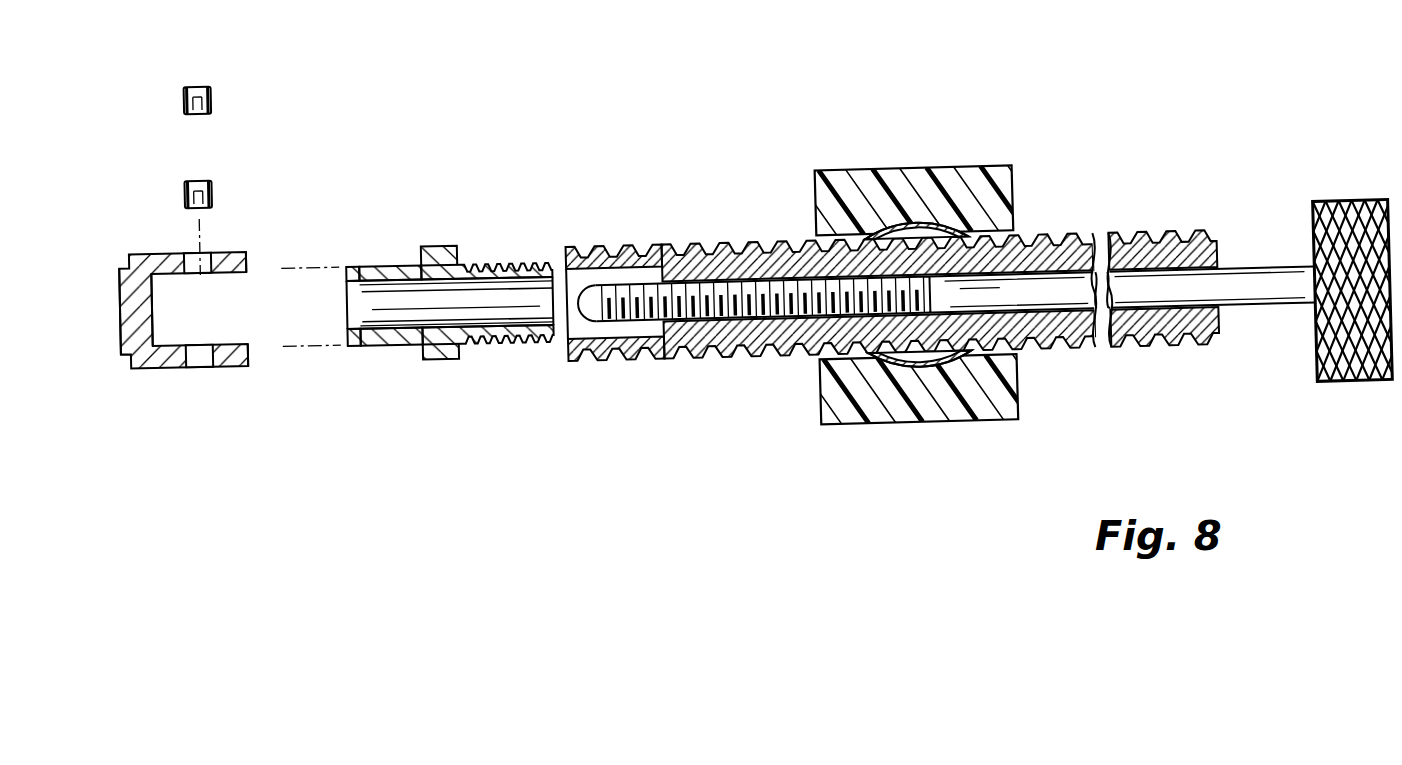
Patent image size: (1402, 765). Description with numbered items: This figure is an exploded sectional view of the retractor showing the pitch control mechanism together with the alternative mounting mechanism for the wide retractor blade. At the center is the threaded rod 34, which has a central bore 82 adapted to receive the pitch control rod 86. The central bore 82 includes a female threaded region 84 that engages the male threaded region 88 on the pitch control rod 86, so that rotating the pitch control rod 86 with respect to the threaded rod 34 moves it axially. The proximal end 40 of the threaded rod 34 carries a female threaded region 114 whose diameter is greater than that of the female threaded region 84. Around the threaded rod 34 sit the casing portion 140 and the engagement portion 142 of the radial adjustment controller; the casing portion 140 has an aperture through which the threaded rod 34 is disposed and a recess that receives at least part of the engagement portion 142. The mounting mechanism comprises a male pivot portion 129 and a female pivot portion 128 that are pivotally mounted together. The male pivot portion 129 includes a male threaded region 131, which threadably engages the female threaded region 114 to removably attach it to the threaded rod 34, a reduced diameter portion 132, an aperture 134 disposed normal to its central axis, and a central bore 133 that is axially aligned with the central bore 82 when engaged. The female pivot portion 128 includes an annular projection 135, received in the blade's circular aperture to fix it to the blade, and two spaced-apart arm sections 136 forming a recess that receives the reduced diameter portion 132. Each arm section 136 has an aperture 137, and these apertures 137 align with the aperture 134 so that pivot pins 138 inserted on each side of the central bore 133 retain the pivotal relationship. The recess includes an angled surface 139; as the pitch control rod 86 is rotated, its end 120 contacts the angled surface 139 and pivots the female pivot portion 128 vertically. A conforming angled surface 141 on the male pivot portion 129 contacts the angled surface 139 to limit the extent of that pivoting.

The threaded rod 34 is at (1122, 236).
The proximal end 40 is at (707, 250).
The central bore 82 is at (1092, 347).
The female threaded region 84 is at (720, 340).
The pitch control rod 86 is at (1165, 347).
The male threaded region 88 is at (790, 296).
The female threaded region 114 is at (598, 253).
The end of the pitch control rod 120 is at (586, 302).
The female pivot portion 128 is at (131, 363).
The male pivot portion 129 is at (446, 250).
The male threaded region 131 is at (493, 342).
The reduced diameter portion 132 is at (350, 263).
The central bore 133 is at (418, 298).
The aperture 134 is at (378, 265).
The annular projection 135 is at (120, 310).
The spaced-apart arm sections 136 is at (243, 250).
The aperture 137 is at (192, 250).
The pivot pins 138 is at (185, 186).
The angled surface 139 is at (346, 300).
The casing portion 140 is at (846, 180).
The angled surface 141 is at (153, 318).
The engagement portion 142 is at (920, 232).